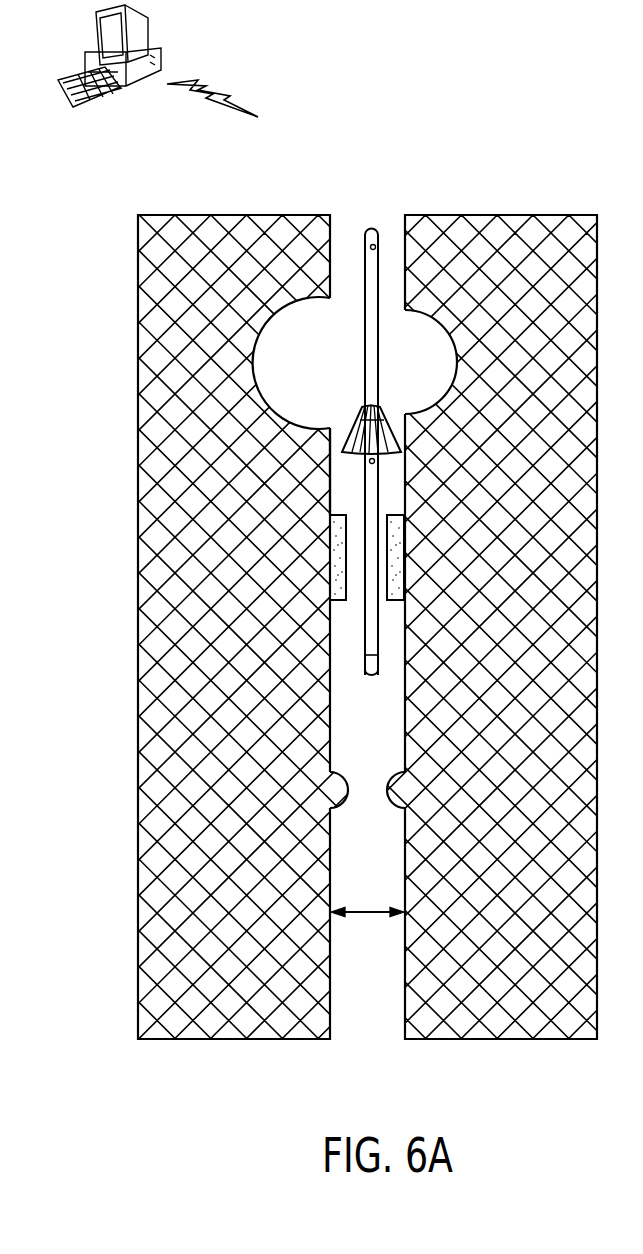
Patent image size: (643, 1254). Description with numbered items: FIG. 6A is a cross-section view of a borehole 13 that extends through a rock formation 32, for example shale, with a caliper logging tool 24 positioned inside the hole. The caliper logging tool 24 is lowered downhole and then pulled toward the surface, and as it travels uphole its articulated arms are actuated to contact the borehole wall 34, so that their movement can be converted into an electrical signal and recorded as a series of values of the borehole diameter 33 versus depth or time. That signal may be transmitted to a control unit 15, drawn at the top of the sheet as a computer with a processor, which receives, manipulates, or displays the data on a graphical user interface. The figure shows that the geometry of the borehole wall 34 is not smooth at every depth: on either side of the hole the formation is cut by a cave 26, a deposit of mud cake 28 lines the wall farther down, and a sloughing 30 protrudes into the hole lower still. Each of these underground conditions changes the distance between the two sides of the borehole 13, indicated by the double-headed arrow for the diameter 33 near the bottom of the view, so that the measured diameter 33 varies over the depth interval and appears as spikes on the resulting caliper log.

The borehole 13 is at (348, 228).
The control unit 15 is at (96, 31).
The caliper logging tool 24 is at (380, 502).
The cave 26 is at (252, 366).
The mud cake 28 is at (333, 555).
The sloughing 30 is at (330, 790).
The rock formation 32 is at (138, 255).
The borehole diameter 33 is at (364, 914).
The borehole wall 34 is at (327, 430).